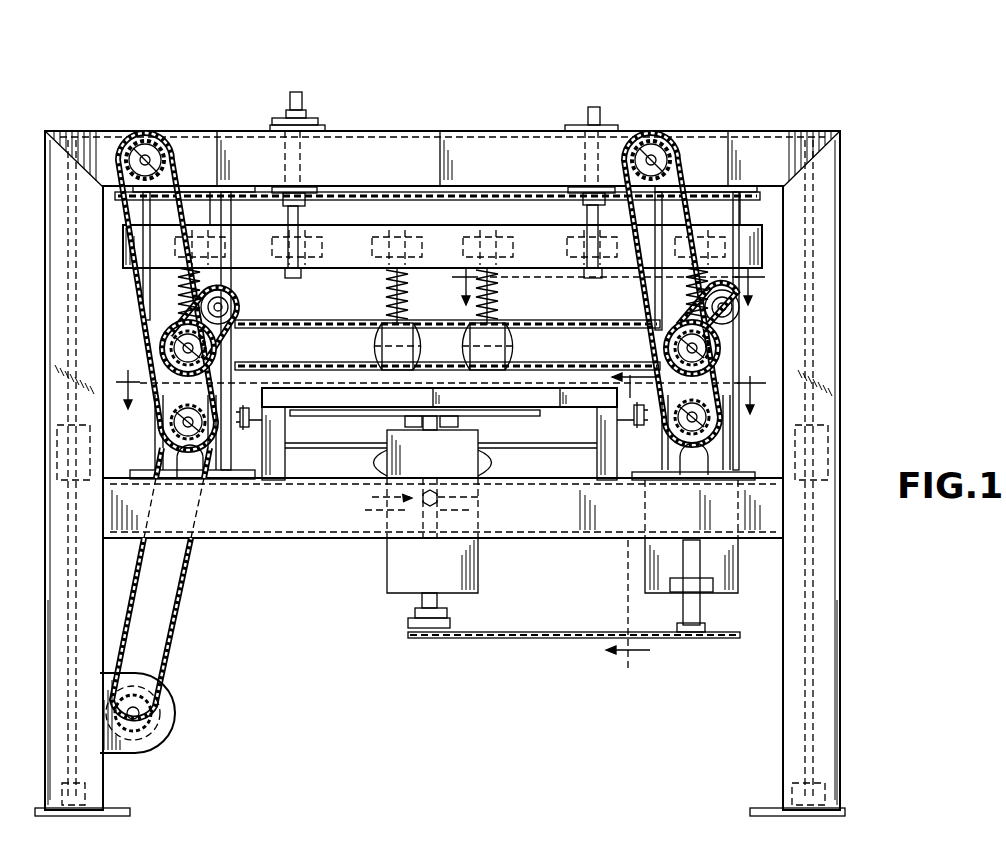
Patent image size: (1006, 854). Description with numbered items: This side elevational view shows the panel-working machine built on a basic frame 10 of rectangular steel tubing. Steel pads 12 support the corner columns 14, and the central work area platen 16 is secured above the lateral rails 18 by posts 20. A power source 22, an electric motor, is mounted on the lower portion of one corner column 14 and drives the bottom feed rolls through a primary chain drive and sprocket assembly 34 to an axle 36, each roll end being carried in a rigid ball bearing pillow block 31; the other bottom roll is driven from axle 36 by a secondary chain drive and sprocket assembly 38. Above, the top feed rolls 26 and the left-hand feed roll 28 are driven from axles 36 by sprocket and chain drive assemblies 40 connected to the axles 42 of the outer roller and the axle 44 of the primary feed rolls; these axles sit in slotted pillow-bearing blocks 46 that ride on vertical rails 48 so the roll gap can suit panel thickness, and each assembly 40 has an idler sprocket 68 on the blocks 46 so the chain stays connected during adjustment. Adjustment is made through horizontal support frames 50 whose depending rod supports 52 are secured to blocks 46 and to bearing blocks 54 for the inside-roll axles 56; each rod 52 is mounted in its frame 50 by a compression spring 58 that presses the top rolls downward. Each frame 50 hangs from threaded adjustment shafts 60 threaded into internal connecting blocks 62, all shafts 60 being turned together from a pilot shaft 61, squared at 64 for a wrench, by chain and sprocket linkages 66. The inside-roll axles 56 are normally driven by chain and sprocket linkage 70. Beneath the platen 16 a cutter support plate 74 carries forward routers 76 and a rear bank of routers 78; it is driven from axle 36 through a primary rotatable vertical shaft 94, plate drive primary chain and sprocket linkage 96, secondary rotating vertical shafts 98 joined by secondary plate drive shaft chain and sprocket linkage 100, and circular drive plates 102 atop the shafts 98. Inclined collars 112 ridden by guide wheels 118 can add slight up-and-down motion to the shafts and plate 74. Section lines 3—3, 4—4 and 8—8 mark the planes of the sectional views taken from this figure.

The basic frame 10 is at (44, 242).
The steel pads 12 is at (120, 808).
The corner columns 14 is at (58, 348).
The central work area platen 16 is at (545, 398).
The lateral rails 18 is at (245, 520).
The posts 20 is at (280, 478).
The power source 22 is at (150, 743).
The top feed rolls 26 is at (185, 375).
The left-hand feed roll 28 is at (710, 369).
The ball bearing pillow blocks 31 is at (178, 470).
The primary chain drive and sprocket assembly 34 is at (180, 622).
The axle 36 is at (186, 423).
The secondary chain drive and sprocket assembly 38 is at (258, 475).
The sprocket and chain drive assemblies 40 is at (150, 297).
The axles 42 is at (183, 348).
The axle 44 is at (688, 349).
The slotted pillow-bearing blocks 46 is at (213, 347).
The vertical rails 48 is at (238, 224).
The horizontal support frames 50 is at (365, 288).
The rod supports 52 is at (404, 300).
The bearing blocks 54 is at (418, 328).
The inside-roll axles 56 is at (470, 346).
The compression spring 58 is at (388, 306).
The threaded adjustment shafts 60 is at (588, 165).
The pilot shaft 61 is at (290, 160).
The internal connecting blocks 62 is at (283, 237).
The squared portion 64 is at (303, 104).
The chain and sprocket linkages 66 is at (288, 126).
The idler sprocket 68 is at (230, 300).
The chain and sprocket linkage 70 is at (610, 318).
The cutter support plate 74 is at (487, 418).
The forward routers 76 is at (494, 462).
The rear bank of routers 78 is at (372, 462).
The primary rotatable vertical shaft 94 is at (698, 605).
The plate drive primary chain and sprocket linkage 96 is at (530, 640).
The secondary rotating vertical shafts 98 is at (422, 602).
The secondary plate drive shaft chain and sprocket linkage 100 is at (450, 620).
The circular drive plates 102 is at (358, 421).
The inclined collars 112 is at (379, 497).
The guide wheels 118 is at (473, 497).
The section line 3— 3 is at (609, 286).
The section line 4— 4 is at (438, 392).
The section line 8— 8 is at (633, 522).